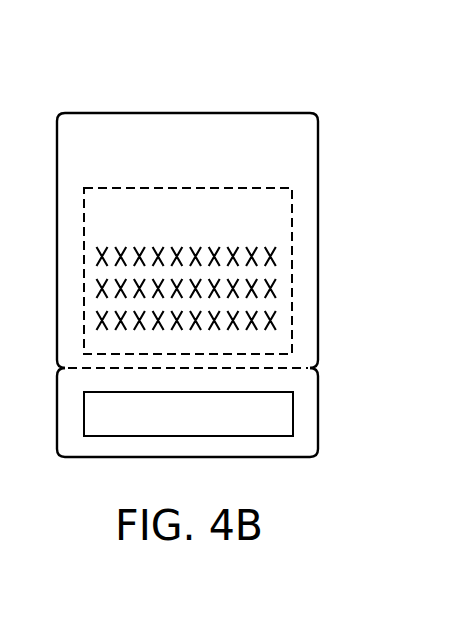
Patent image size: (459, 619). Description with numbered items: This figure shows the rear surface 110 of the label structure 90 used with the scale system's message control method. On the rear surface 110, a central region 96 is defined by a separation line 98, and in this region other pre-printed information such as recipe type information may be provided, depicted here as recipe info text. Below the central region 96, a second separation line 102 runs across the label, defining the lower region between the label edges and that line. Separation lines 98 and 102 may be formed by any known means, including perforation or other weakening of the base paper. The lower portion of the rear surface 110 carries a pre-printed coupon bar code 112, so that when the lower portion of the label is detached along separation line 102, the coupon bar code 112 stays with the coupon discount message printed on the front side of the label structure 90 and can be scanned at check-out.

The label structure 90 is at (218, 233).
The label structure rear surface 110 is at (216, 212).
The separation line 98 is at (292, 214).
The central region 96 is at (282, 267).
The separation line 102 is at (292, 367).
The coupon bar code 112 is at (283, 417).